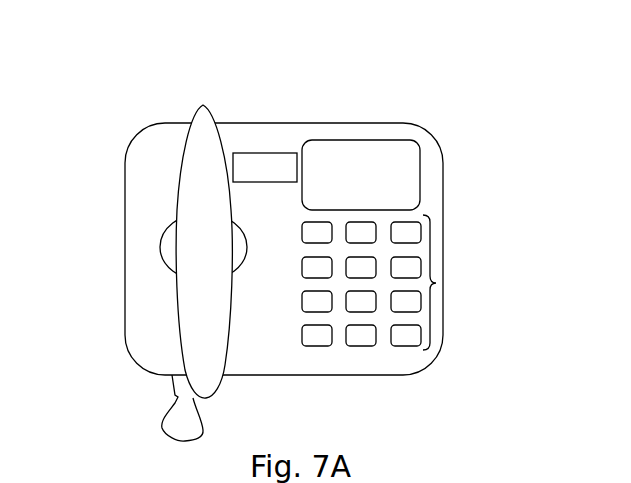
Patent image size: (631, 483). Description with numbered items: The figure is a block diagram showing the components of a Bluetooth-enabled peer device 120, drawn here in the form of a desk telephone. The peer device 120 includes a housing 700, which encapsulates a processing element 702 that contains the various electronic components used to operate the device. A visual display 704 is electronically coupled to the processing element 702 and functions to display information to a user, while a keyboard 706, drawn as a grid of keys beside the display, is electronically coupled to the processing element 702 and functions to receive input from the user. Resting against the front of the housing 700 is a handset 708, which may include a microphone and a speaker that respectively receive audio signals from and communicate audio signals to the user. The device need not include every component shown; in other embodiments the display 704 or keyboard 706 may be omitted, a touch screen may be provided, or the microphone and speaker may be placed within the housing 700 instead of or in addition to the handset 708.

The Bluetooth-enabled peer device 120 is at (408, 77).
The housing 700 is at (155, 160).
The processing element 702 is at (264, 160).
The visual display 704 is at (410, 173).
The keyboard 706 is at (436, 283).
The handset 708 is at (193, 328).